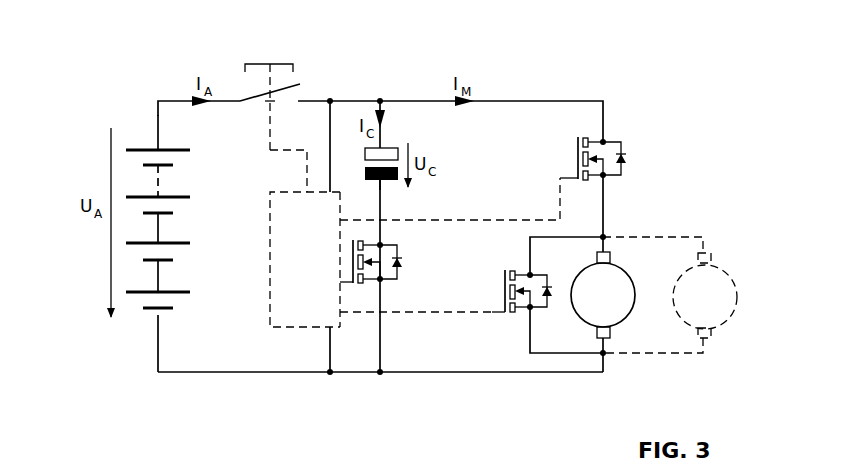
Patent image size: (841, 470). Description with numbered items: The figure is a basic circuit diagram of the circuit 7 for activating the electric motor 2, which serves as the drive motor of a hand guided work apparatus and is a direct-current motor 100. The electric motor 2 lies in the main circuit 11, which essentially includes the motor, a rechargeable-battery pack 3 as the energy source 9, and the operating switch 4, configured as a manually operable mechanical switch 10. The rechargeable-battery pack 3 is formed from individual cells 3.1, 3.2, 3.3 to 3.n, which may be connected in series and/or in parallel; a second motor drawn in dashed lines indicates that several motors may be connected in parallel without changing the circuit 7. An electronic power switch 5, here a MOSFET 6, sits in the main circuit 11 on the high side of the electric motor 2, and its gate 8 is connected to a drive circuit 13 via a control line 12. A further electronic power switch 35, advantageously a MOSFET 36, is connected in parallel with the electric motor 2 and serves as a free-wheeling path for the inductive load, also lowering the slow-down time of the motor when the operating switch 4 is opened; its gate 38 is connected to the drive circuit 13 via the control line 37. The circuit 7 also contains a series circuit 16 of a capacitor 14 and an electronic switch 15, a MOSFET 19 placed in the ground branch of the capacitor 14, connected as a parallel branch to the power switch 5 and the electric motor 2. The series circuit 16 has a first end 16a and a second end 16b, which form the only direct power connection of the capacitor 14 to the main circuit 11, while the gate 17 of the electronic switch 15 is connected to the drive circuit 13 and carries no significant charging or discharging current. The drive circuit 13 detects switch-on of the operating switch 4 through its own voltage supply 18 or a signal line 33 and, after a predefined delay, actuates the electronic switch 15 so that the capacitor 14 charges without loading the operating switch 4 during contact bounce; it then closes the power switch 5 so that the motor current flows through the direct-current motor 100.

The electric motor 2 is at (617, 303).
The rechargeable-battery pack 3 is at (171, 266).
The individual cell 3.1 is at (163, 300).
The individual cell 3.2 is at (163, 252).
The individual cell 3.3 is at (163, 205).
The individual cell 3.n is at (163, 157).
The operating switch 4 is at (238, 82).
The electronic power switch 5 is at (613, 138).
The MOSFET 6 is at (610, 152).
The circuit 7 is at (152, 97).
The gate 8 is at (568, 178).
The energy source 9 is at (146, 138).
The mechanical switch 10 is at (285, 63).
The main circuit 11 is at (573, 101).
The control line 12 is at (483, 219).
The drive circuit 13 is at (302, 307).
The capacitor 14 is at (388, 150).
The electronic switch 15 is at (388, 243).
The series circuit 16 is at (381, 338).
The first end 16a is at (380, 100).
The second end 16b is at (381, 374).
The gate 17 is at (346, 285).
The voltage supply 18 is at (330, 137).
The MOSFET 19 is at (387, 268).
The signal line 33 is at (268, 146).
The electronic power switch 35 is at (517, 262).
The MOSFET 36 is at (535, 299).
The control line 37 is at (473, 313).
The gate 38 is at (496, 311).
The direct-current motor 100 is at (617, 256).